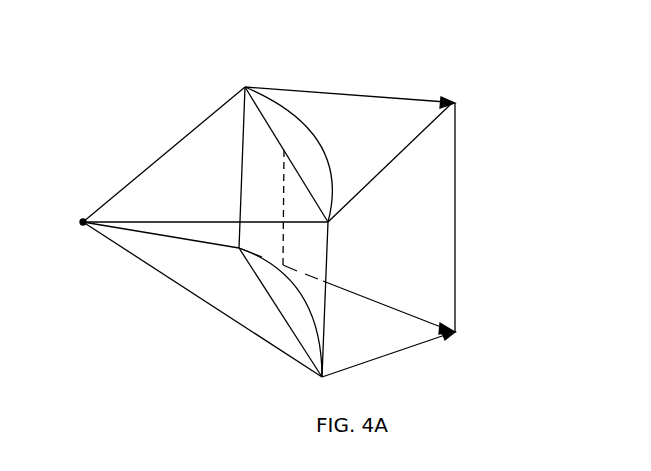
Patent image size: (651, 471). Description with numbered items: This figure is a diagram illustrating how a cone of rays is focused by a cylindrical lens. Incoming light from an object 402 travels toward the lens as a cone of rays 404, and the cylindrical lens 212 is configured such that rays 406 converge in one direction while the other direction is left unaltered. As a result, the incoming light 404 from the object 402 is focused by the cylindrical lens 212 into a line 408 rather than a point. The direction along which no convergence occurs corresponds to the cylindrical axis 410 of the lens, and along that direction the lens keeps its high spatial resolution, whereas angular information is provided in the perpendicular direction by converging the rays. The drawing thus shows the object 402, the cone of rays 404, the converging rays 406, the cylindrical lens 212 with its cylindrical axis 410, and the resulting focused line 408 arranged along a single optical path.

The object 402 is at (82, 225).
The cone of rays 404 is at (152, 162).
The rays 406 is at (396, 97).
The line 408 is at (456, 203).
The cylindrical lens 212 is at (280, 113).
The cylindrical axis 410 is at (283, 253).